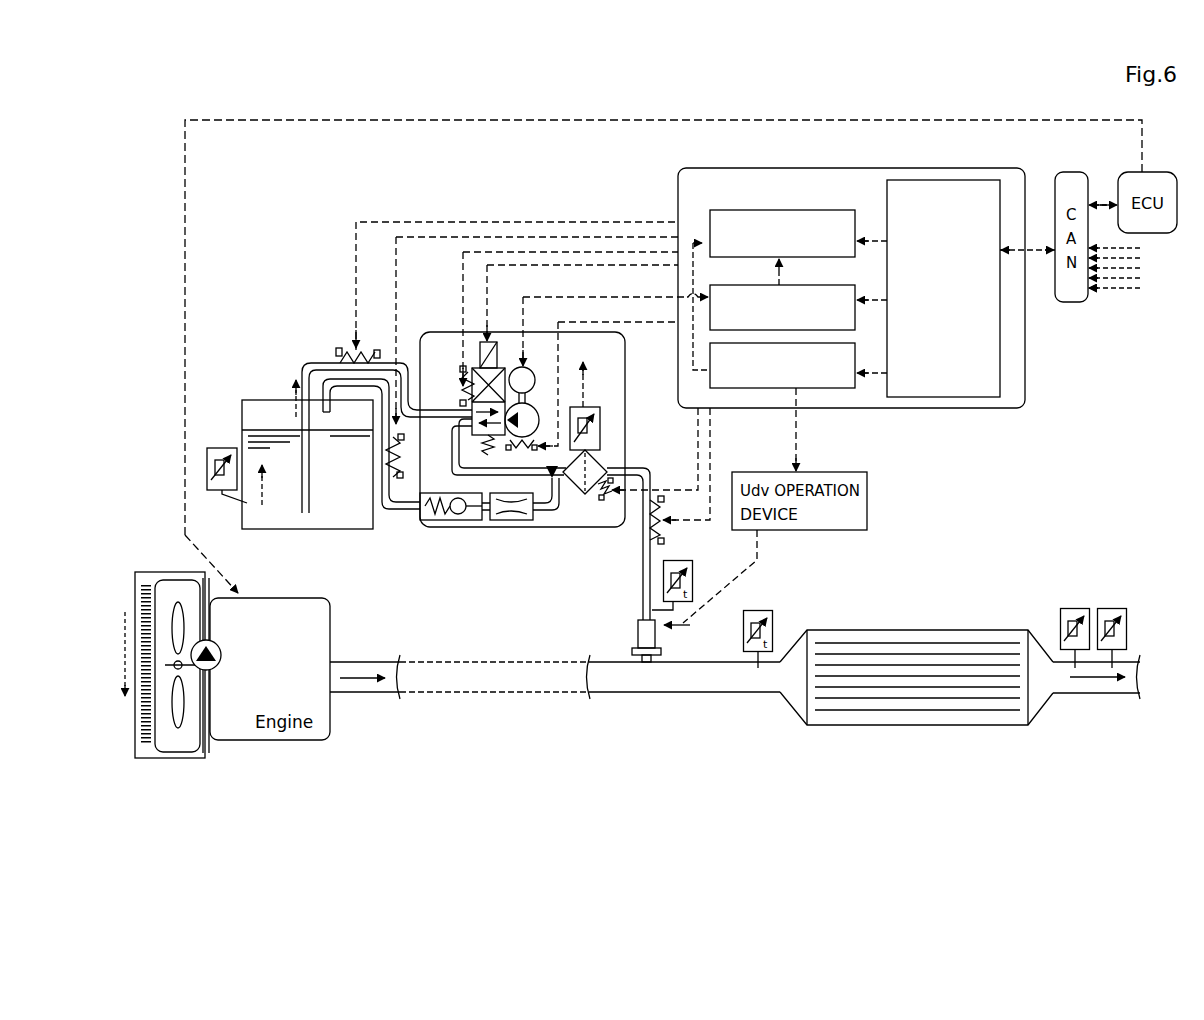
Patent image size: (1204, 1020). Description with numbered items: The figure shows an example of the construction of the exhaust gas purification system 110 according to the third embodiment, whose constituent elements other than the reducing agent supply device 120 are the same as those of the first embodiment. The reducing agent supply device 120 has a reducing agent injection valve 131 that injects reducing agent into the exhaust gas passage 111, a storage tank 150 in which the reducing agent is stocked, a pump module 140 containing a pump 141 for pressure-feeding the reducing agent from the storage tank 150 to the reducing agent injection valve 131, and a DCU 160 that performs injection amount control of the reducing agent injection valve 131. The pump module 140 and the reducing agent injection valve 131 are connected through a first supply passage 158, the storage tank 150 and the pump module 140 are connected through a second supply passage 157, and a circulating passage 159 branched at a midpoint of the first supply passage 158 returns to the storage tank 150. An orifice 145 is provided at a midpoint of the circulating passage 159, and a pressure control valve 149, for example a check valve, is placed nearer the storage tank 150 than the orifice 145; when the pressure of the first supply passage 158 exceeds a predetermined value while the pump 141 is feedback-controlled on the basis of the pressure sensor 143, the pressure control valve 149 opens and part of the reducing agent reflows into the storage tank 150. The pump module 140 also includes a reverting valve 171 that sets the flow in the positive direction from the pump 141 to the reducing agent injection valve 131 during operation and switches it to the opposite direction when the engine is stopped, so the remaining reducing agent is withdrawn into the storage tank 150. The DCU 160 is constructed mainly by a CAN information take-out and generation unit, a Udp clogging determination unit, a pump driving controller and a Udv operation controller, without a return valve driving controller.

The exhaust gas purification system 110 is at (918, 532).
The exhaust gas passage 111 is at (680, 693).
The reducing agent supply device 120 is at (286, 250).
The reducing agent injection valve 131 is at (638, 620).
The pump module 140 is at (547, 458).
The pump 141 is at (544, 400).
The pressure sensor 143 is at (602, 424).
The orifice 145 is at (517, 521).
The pressure control valve 149 is at (446, 521).
The storage tank 150 is at (296, 531).
The second supply passage 157 is at (390, 370).
The first supply passage 158 is at (645, 545).
The circulating passage 159 is at (392, 510).
The DCU 160 is at (851, 277).
The reverting valve 171 is at (499, 372).